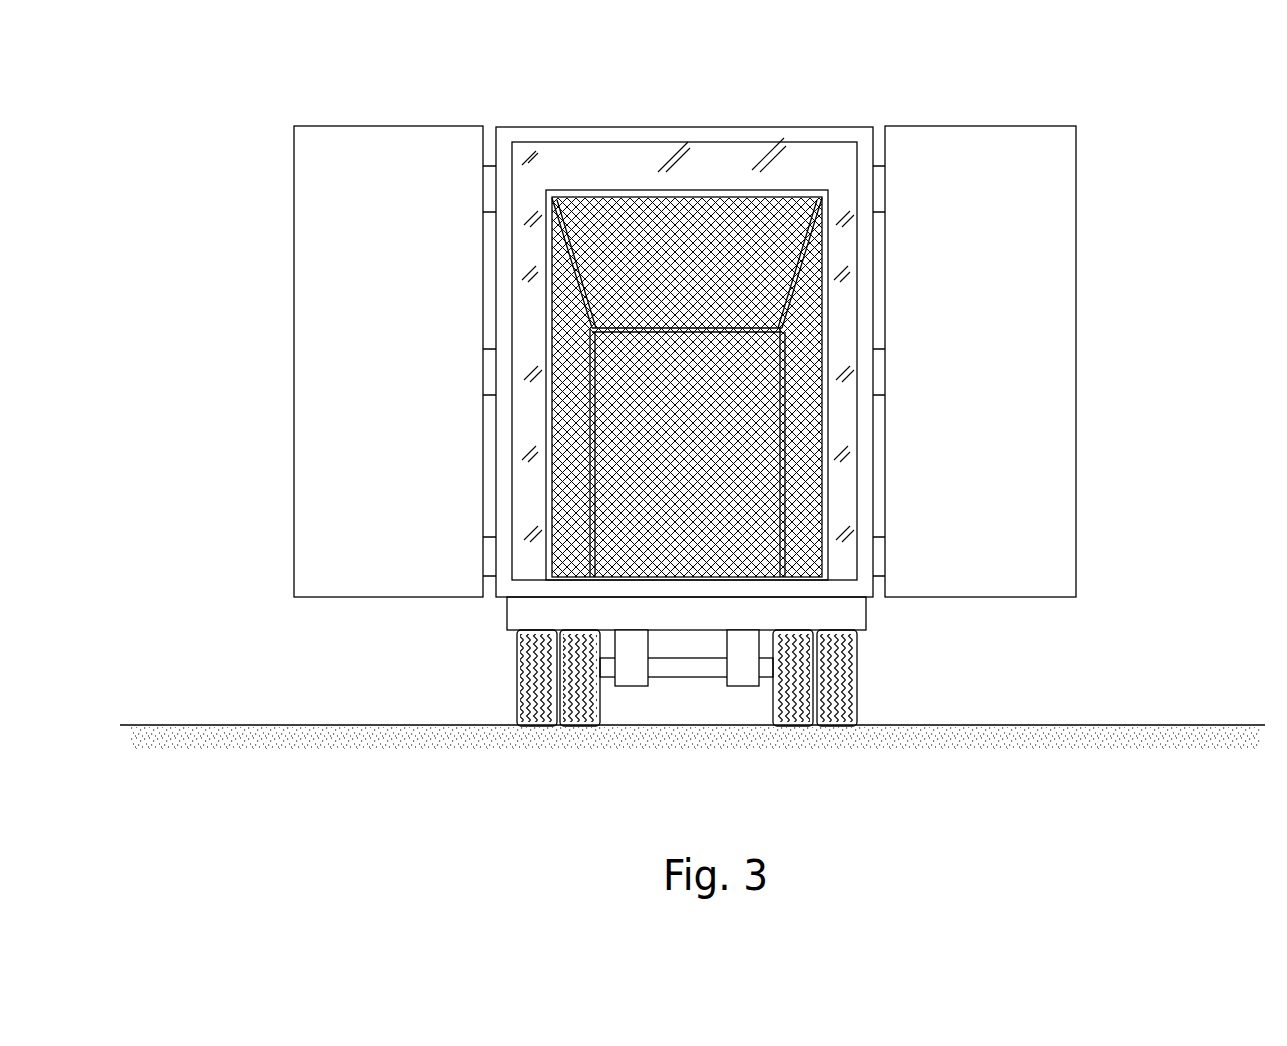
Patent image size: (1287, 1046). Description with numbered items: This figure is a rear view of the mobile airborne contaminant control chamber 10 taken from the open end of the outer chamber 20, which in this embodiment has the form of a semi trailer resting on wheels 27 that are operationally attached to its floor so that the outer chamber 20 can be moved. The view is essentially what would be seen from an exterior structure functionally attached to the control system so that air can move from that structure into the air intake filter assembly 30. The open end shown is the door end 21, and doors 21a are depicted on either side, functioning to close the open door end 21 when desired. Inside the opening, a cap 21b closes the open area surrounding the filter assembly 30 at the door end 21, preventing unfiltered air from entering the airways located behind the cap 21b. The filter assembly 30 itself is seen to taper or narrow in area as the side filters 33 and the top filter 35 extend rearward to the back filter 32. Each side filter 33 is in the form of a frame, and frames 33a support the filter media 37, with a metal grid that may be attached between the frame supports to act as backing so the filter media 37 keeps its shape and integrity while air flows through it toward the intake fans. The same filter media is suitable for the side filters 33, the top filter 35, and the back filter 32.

The mobile airborne contaminant control chamber 10 is at (1130, 88).
The outer chamber 20 is at (663, 107).
The door end 21 is at (723, 165).
The doors 21a is at (374, 126).
The cap 21b is at (840, 162).
The wheels 27 is at (517, 660).
The air intake filter assembly 30 is at (618, 514).
The back filter 32 is at (693, 501).
The side filters 33 is at (572, 540).
The frames 33a is at (565, 192).
The top filter 35 is at (623, 205).
The filter media 37 is at (643, 458).